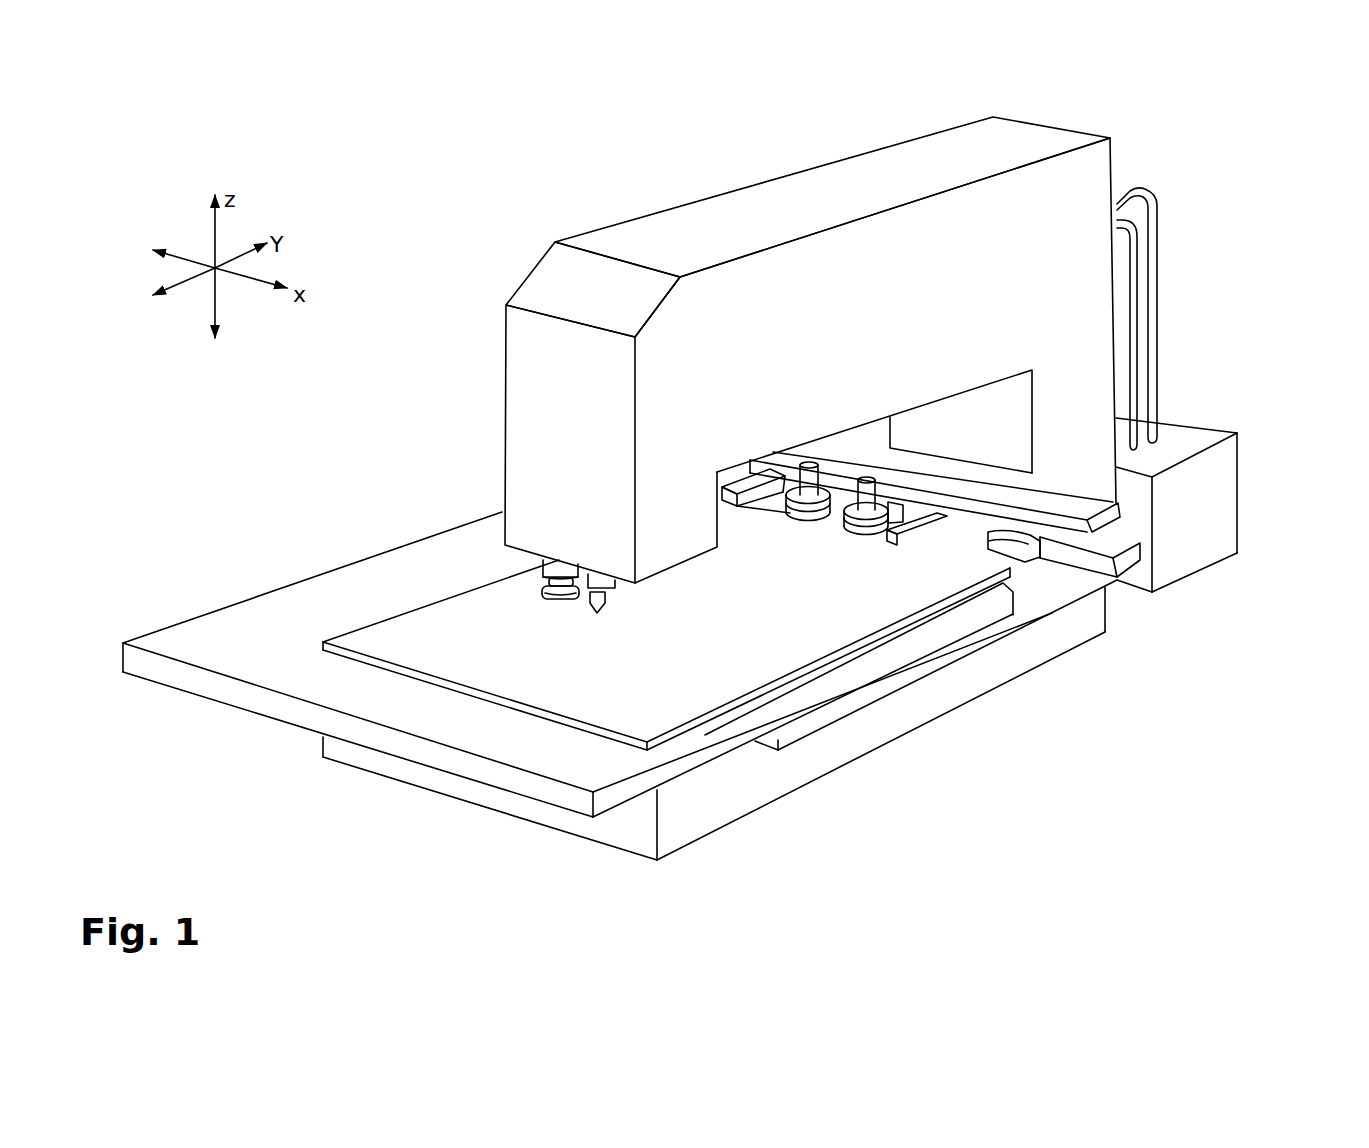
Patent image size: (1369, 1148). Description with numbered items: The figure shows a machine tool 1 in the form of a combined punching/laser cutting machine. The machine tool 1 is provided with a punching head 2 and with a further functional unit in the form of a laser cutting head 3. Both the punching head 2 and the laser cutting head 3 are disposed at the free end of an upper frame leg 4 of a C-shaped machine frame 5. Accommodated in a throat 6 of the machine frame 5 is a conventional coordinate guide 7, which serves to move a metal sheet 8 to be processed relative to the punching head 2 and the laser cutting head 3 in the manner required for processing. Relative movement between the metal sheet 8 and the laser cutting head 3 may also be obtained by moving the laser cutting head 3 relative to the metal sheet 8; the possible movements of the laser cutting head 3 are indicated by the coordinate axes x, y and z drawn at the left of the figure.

The machine tool 1 is at (516, 246).
The punching head 2 is at (530, 586).
The laser cutting head 3 is at (583, 604).
The upper frame leg 4 is at (836, 324).
The machine frame 5 is at (842, 153).
The throat 6 is at (946, 440).
The coordinate guide 7 is at (1127, 583).
The metal sheet 8 is at (740, 672).